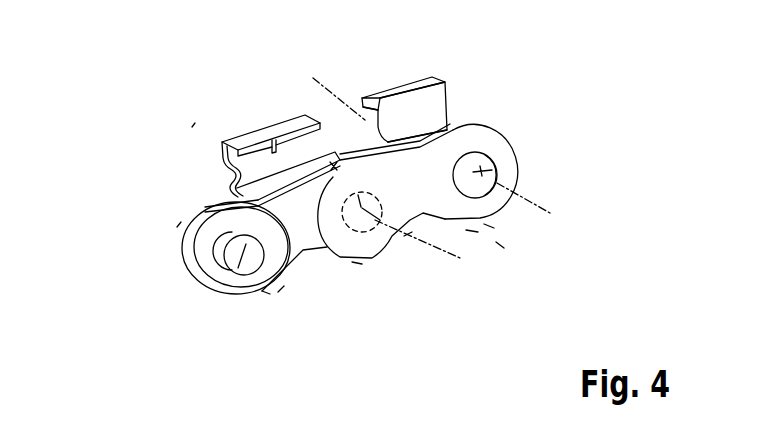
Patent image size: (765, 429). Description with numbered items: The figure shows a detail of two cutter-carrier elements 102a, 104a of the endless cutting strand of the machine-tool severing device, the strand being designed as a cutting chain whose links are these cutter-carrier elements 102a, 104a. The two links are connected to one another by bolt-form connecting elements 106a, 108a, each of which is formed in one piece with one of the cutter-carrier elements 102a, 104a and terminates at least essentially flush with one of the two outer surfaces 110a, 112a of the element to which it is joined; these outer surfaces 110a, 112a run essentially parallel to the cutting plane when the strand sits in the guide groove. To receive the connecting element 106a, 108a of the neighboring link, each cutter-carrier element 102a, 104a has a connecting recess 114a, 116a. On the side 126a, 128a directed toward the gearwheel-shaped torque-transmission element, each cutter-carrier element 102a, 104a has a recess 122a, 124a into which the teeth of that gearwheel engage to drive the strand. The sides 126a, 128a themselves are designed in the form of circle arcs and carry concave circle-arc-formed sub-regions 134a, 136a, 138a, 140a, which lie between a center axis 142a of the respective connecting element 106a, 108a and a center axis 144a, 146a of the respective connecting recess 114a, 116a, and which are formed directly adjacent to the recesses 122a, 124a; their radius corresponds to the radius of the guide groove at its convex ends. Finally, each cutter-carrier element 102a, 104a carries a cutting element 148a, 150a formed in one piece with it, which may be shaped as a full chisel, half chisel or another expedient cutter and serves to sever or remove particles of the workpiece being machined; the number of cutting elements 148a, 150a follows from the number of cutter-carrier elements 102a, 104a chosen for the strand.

The cutter-carrier element 102a is at (207, 233).
The cutter-carrier element 104a is at (480, 125).
The connecting element 106a is at (243, 262).
The connecting element 108a is at (293, 125).
The outer surface 110a is at (412, 175).
The outer surface 112a is at (183, 247).
The connecting recess 114a is at (385, 236).
The connecting recess 116a is at (492, 170).
The recess 122a is at (325, 262).
The recess 124a is at (472, 233).
The side 126a is at (267, 293).
The side 128a is at (488, 227).
The sub-region 134a is at (281, 293).
The sub-region 136a is at (357, 265).
The sub-region 138a is at (408, 237).
The sub-region 140a is at (500, 245).
The center axis 142a is at (177, 227).
The center axis 144a is at (192, 127).
The center axis 146a is at (313, 78).
The cutting element 148a is at (255, 128).
The cutting element 150a is at (378, 92).